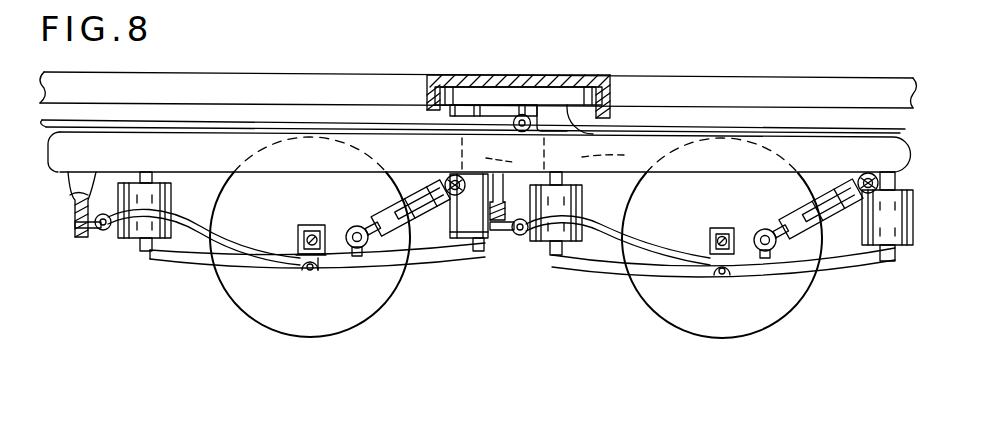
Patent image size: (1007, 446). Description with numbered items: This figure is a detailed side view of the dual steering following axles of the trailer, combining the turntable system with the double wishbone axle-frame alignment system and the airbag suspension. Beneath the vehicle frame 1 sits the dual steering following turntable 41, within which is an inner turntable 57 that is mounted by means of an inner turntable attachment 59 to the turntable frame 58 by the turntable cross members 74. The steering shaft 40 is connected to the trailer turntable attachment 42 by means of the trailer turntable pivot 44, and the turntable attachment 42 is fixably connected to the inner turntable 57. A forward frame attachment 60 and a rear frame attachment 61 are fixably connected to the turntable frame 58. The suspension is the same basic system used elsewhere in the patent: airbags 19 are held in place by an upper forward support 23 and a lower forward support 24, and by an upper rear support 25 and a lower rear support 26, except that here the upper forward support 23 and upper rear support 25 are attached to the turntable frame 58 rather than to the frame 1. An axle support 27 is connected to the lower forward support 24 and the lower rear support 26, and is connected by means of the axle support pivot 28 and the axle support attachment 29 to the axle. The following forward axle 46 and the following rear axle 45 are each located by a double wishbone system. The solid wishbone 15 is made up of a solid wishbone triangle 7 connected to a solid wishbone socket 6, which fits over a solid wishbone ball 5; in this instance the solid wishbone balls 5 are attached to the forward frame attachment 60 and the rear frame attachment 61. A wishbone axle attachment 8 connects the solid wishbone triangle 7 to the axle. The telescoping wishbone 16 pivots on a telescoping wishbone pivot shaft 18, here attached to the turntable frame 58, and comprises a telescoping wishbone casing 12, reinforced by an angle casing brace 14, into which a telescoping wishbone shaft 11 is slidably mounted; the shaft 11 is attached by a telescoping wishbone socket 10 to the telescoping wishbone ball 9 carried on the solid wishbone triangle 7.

The frame 1 is at (197, 77).
The solid wishbone ball 5 is at (95, 236).
The solid wishbone socket 6 is at (104, 235).
The solid wishbone triangle 7 is at (208, 242).
The wishbone axle attachment 8 is at (310, 258).
The telescoping wishbone ball 9 is at (359, 230).
The telescoping wishbone socket 10 is at (347, 236).
The telescoping wishbone shaft 11 is at (372, 226).
The telescoping wishbone casing 12 is at (814, 210).
The angle casing brace 14 is at (427, 208).
The solid wishbone 15 is at (231, 224).
The telescoping wishbone 16 is at (420, 236).
The telescoping wishbone pivot shaft 18 is at (455, 178).
The airbags 19 is at (172, 202).
The upper forward support 23 is at (140, 175).
The lower forward support 24 is at (146, 255).
The upper rear support 25 is at (916, 169).
The lower rear support 26 is at (476, 259).
The axle support 27 is at (214, 270).
The axle support pivot 28 is at (305, 270).
The axle support attachment 29 is at (319, 270).
The steering shaft 40 is at (45, 140).
The dual steering following turntable 41 is at (572, 80).
The trailer turntable attachment 42 is at (518, 131).
The trailer turntable pivot 44 is at (570, 133).
The following rear axle 45 is at (720, 228).
The following forward axle 46 is at (311, 226).
The inner turntable 57 is at (485, 90).
The turntable frame 58 is at (60, 160).
The inner turntable attachment 59 is at (538, 106).
The forward frame attachment 60 is at (68, 190).
The rear frame attachment 61 is at (494, 252).
The turntable cross members 74 is at (558, 156).